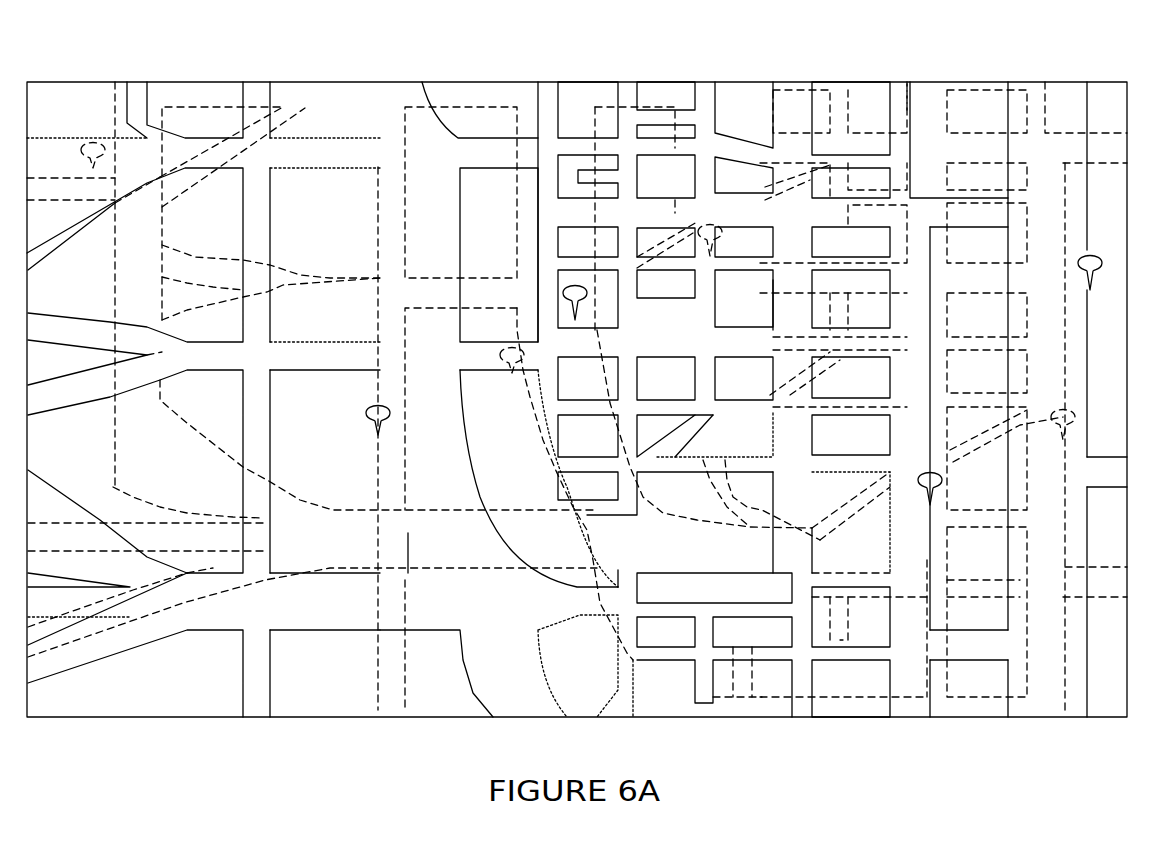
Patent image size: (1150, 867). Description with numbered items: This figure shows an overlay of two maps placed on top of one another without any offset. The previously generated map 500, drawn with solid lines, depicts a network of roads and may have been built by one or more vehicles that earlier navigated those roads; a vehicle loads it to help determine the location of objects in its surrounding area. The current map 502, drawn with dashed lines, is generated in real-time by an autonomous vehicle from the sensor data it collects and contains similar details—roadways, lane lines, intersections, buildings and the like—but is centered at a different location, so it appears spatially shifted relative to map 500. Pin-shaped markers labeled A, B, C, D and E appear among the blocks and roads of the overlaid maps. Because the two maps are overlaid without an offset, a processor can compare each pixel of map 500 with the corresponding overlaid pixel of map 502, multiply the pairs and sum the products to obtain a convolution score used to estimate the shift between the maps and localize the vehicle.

The map 500 is at (742, 82).
The current map 502 is at (306, 107).
The location marker A is at (445, 392).
The location marker B is at (996, 458).
The location marker C is at (642, 273).
The location marker D is at (1090, 273).
The location marker E is at (93, 156).